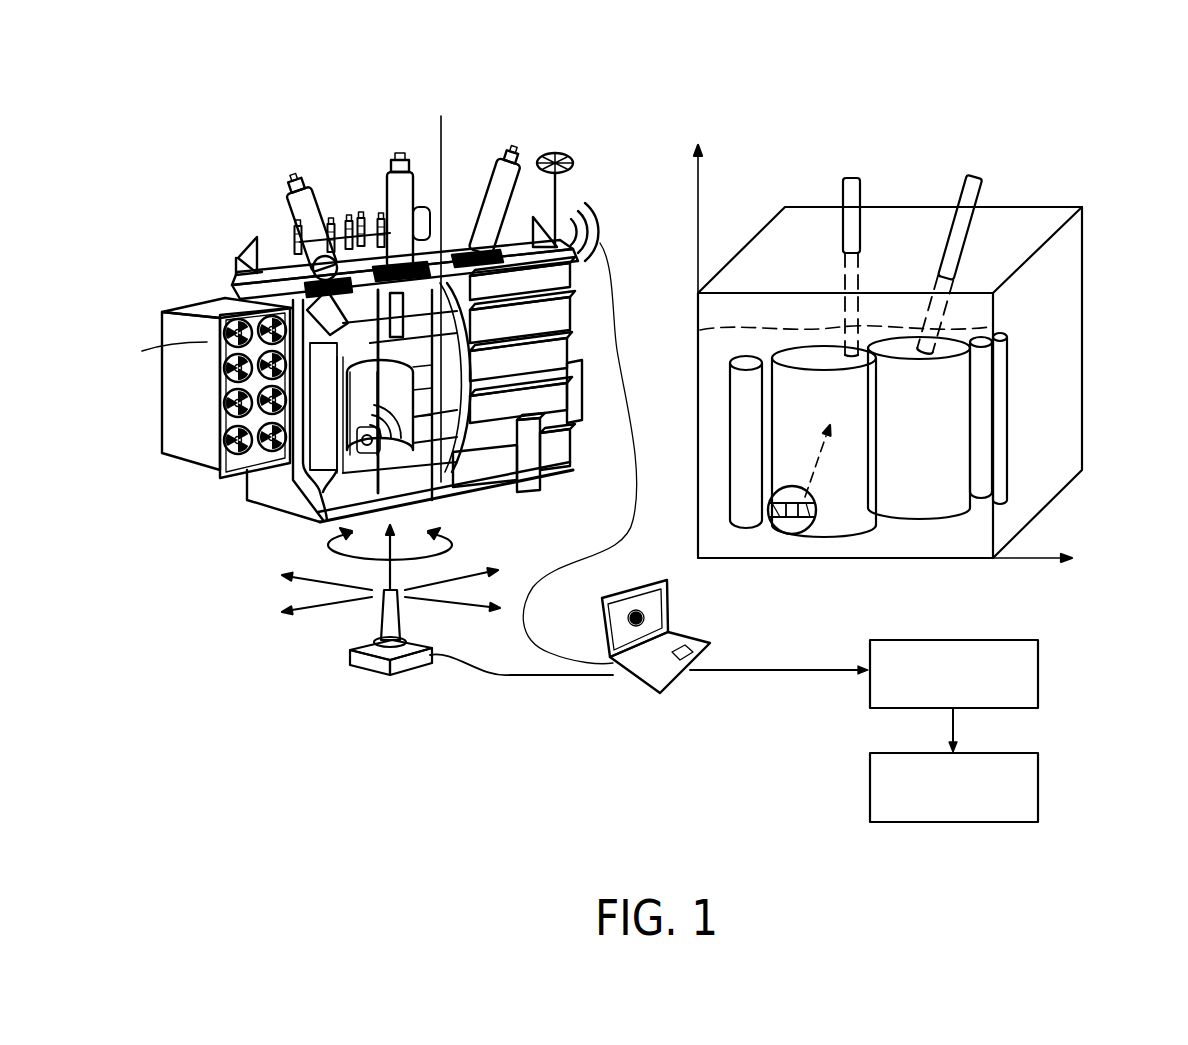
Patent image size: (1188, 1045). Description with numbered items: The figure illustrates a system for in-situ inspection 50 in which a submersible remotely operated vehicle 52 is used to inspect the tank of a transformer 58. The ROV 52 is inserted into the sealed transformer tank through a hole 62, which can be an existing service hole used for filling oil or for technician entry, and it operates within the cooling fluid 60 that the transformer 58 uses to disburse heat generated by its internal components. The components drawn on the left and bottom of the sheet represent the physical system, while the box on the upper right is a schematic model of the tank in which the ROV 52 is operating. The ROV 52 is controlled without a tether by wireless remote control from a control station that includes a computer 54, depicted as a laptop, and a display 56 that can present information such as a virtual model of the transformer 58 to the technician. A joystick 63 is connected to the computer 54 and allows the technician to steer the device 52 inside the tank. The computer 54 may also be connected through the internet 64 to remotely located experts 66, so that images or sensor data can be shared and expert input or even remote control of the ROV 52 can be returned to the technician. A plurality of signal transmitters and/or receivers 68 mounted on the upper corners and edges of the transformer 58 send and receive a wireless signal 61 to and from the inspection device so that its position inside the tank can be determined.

The system for in-situ inspection 50 is at (648, 122).
The submersible remotely operated vehicle 52 is at (347, 457).
The computer 54 is at (640, 677).
The display 56 is at (660, 615).
The transformer 58 is at (200, 472).
The cooling fluid 60 is at (738, 329).
The wireless signal 61 is at (606, 232).
The hole 62 is at (443, 284).
The joystick 63 is at (350, 663).
The internet 64 is at (922, 640).
The experts 66 is at (1007, 753).
The signal transmitters and/or receivers 68 is at (236, 272).